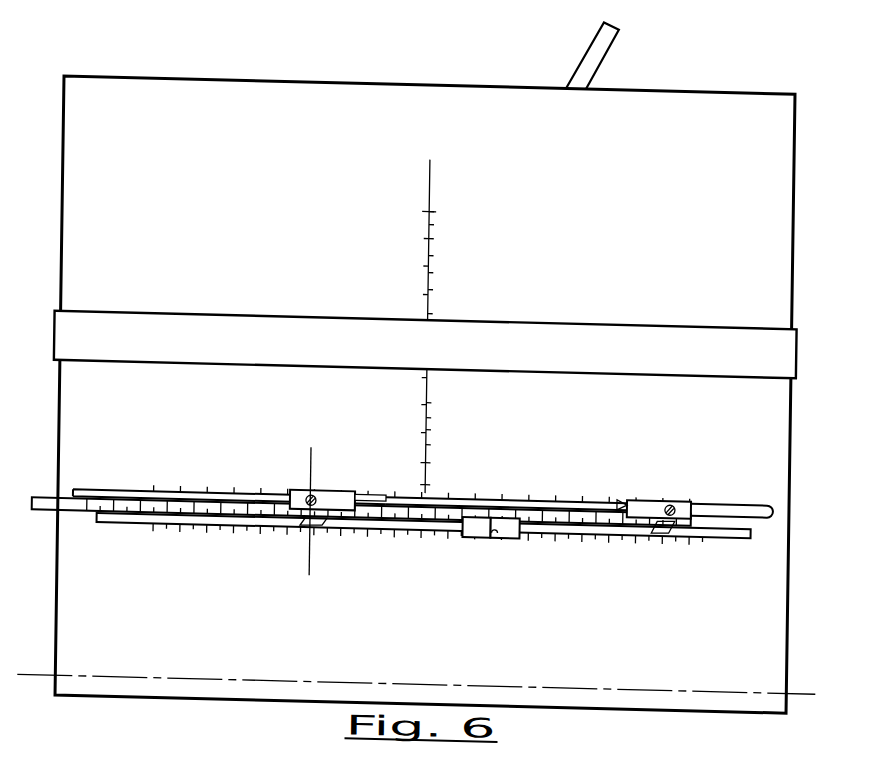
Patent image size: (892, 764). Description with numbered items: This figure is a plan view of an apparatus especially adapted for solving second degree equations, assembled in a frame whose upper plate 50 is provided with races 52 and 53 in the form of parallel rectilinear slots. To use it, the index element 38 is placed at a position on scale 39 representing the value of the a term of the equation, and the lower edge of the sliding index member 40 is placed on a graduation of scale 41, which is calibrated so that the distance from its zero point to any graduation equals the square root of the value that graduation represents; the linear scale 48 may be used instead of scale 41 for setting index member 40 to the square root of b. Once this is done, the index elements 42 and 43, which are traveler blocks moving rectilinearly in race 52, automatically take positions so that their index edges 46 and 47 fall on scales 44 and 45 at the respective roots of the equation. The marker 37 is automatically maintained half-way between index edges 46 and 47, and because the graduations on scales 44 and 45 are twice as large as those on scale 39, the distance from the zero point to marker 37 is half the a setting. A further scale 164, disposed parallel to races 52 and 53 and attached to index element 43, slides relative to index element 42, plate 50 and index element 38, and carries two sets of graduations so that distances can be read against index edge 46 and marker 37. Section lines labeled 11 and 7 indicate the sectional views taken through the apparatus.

The upper plate 50 is at (793, 561).
The sliding index member 40 is at (676, 323).
The scale 41 is at (441, 275).
The linear scale 48 is at (432, 276).
The scale 164 is at (51, 508).
The scale 44 is at (227, 481).
The scale 45 is at (572, 480).
The race 53 is at (734, 518).
The scale 39 is at (627, 526).
The index element 42 is at (359, 488).
The index edge 46 is at (378, 489).
The index element 43 is at (651, 490).
The index edge 47 is at (626, 490).
The race 52 is at (741, 491).
The index element 38 is at (475, 525).
The marker 37 is at (501, 524).
The section line 11- 11 is at (317, 449).
The section line 7- 7 is at (815, 680).